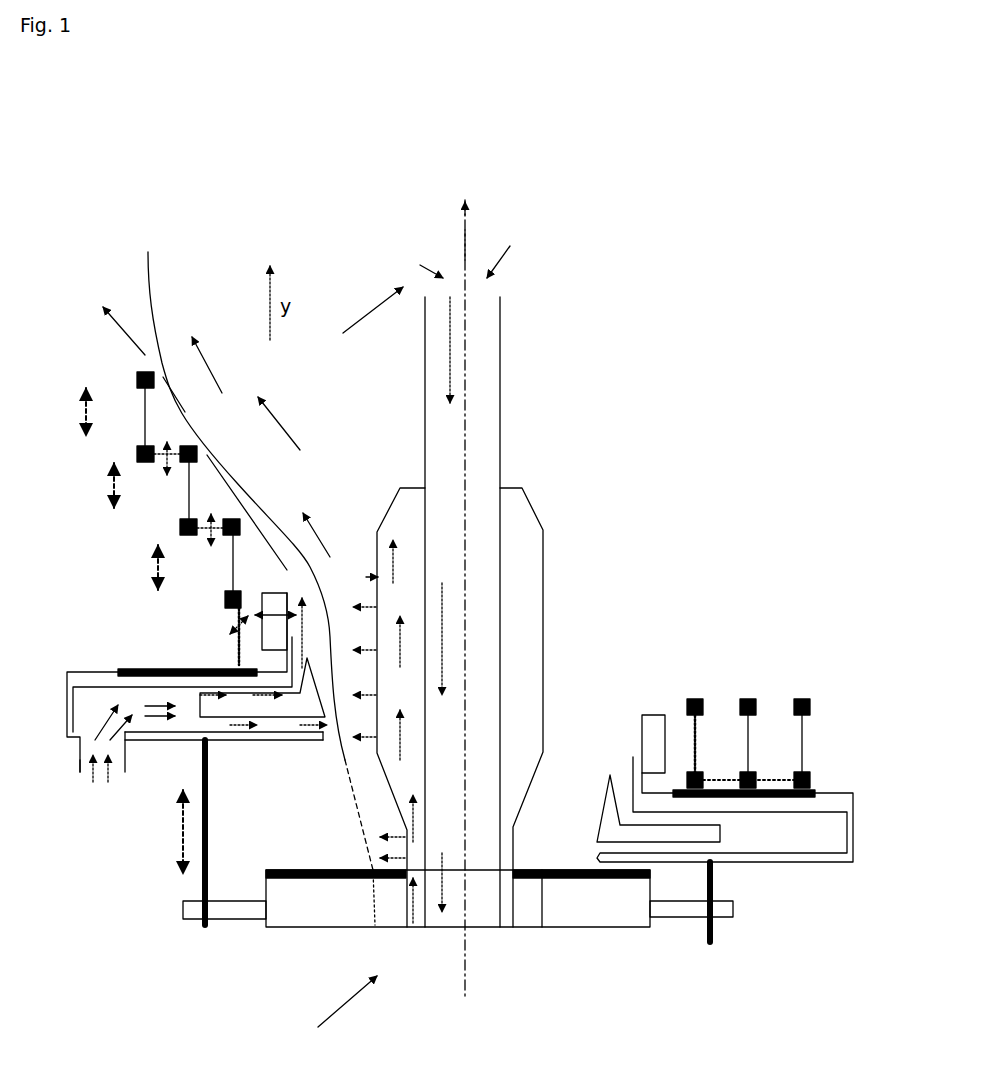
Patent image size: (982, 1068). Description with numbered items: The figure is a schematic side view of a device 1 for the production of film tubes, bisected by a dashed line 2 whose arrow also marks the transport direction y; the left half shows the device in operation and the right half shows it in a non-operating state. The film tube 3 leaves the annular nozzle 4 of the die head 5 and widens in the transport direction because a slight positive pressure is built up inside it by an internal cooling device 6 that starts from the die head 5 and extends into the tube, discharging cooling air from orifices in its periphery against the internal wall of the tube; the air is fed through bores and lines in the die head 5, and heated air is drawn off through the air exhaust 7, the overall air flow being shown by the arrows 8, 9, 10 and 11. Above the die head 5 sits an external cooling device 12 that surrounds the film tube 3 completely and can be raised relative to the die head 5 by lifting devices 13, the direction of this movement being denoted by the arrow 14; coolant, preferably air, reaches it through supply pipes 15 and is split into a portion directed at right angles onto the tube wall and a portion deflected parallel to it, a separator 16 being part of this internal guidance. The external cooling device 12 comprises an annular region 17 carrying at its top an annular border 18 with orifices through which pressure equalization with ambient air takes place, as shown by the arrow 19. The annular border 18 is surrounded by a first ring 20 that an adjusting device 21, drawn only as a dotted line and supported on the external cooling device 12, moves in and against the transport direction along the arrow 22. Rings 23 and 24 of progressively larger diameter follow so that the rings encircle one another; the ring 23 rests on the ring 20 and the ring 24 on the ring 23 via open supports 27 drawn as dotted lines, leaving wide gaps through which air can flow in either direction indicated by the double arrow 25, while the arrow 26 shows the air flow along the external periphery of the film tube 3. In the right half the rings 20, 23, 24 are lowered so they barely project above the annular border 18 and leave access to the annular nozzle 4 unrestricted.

The device 1 is at (337, 1008).
The dashed line 2 is at (467, 232).
The film tube 3 is at (150, 262).
The annular nozzle 4 is at (371, 869).
The die head 5 is at (312, 910).
The internal cooling device 6 is at (503, 392).
The air exhaust 7 is at (469, 251).
The arrow 8 is at (395, 562).
The arrow 9 is at (476, 596).
The arrow 10 is at (318, 536).
The arrow 11 is at (451, 340).
The external cooling device 12 is at (85, 640).
The lifting devices 13 is at (210, 868).
The arrow 14 is at (183, 832).
The supply pipes 15 is at (78, 768).
The guide plate 16 is at (258, 720).
The annular region 17 is at (365, 580).
The annular border 18 is at (375, 575).
The arrow 19 is at (272, 615).
The first ring 20 is at (697, 700).
The adjusting device 21 is at (223, 602).
The arrow 22 is at (85, 417).
The ring 23 is at (180, 527).
The ring 24 is at (137, 375).
The double arrow 25 is at (165, 462).
The arrow 26 is at (127, 330).
The supports 27 is at (237, 655).